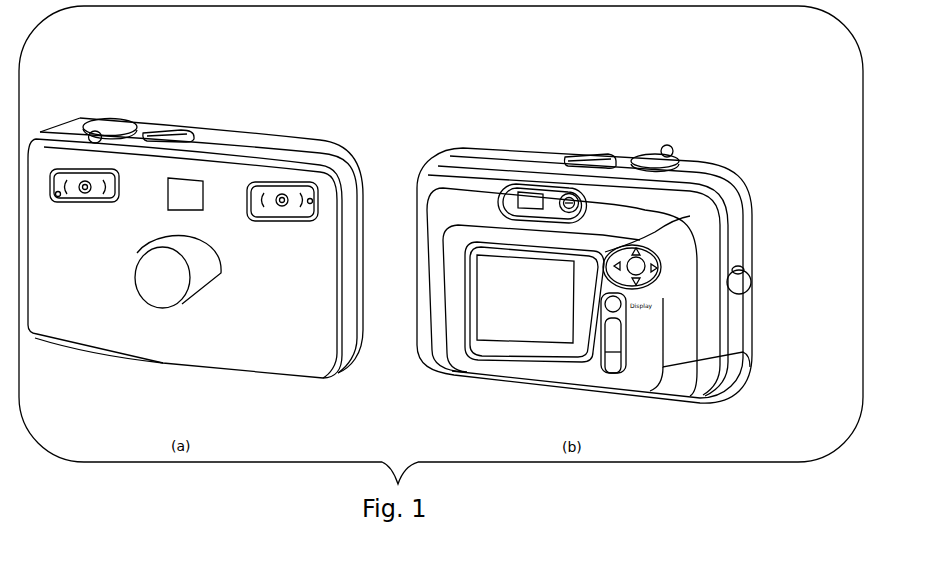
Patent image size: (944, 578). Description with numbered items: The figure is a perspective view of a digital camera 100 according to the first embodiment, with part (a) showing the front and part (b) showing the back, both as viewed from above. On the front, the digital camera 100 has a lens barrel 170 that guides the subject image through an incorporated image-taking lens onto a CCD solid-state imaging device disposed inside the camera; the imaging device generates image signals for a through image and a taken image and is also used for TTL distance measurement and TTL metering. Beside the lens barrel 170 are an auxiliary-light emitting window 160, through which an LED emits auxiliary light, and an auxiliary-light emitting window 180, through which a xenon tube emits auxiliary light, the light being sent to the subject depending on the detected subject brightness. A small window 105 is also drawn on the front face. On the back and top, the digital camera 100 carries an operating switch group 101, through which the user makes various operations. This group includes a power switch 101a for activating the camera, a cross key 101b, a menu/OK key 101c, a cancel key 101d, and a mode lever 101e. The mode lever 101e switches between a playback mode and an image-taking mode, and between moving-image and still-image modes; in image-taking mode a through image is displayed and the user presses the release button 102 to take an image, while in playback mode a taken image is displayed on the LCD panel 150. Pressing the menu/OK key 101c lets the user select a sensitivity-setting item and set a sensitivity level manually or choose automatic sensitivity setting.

The digital camera 100 is at (217, 93).
The operating switch group 101 is at (808, 367).
The power switch 101a is at (160, 130).
The cross key 101b is at (650, 282).
The menu/OK key 101c is at (618, 321).
The cancel key 101d is at (613, 375).
The mode lever 101e is at (92, 131).
The release button 102 is at (109, 119).
The viewfinder window 105 is at (182, 200).
The LCD panel 150 is at (508, 318).
The auxiliary-light emitting window 160 is at (60, 198).
The lens barrel 170 is at (137, 253).
The auxiliary-light emitting window 180 is at (318, 198).